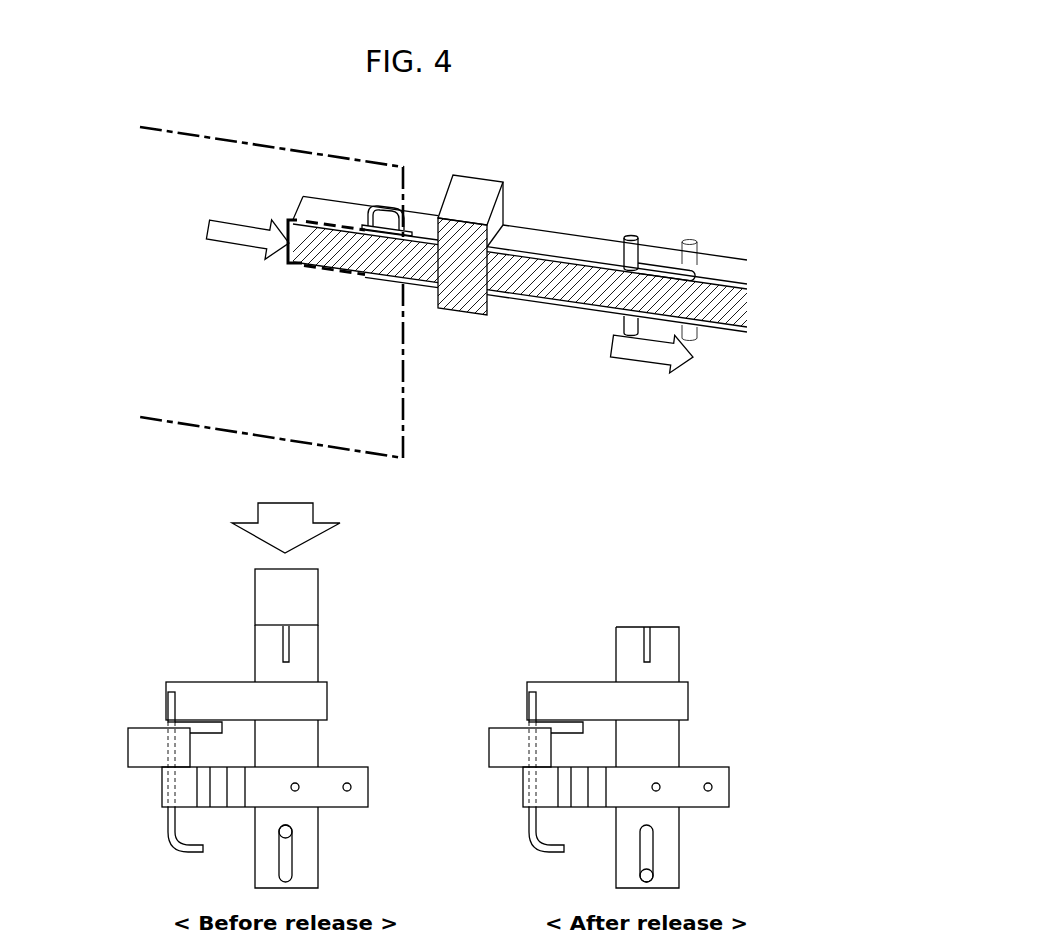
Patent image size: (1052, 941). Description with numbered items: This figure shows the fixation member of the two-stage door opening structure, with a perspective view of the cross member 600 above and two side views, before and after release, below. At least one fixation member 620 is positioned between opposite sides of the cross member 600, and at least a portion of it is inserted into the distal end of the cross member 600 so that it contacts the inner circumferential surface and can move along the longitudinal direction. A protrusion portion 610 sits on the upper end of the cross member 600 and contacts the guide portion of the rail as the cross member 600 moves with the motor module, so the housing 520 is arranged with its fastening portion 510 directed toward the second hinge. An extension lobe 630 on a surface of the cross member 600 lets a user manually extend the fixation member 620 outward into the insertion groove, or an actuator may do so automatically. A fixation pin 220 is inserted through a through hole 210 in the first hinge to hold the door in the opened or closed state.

The cross member 600 is at (533, 238).
The protrusion portion 610 is at (380, 230).
The fixation member 620 is at (327, 215).
The extension lobe 630 is at (630, 233).
The through hole 210 is at (168, 750).
The fixation pin 220 is at (168, 828).
The fastening portion 510 is at (203, 725).
The housing 520 is at (233, 693).